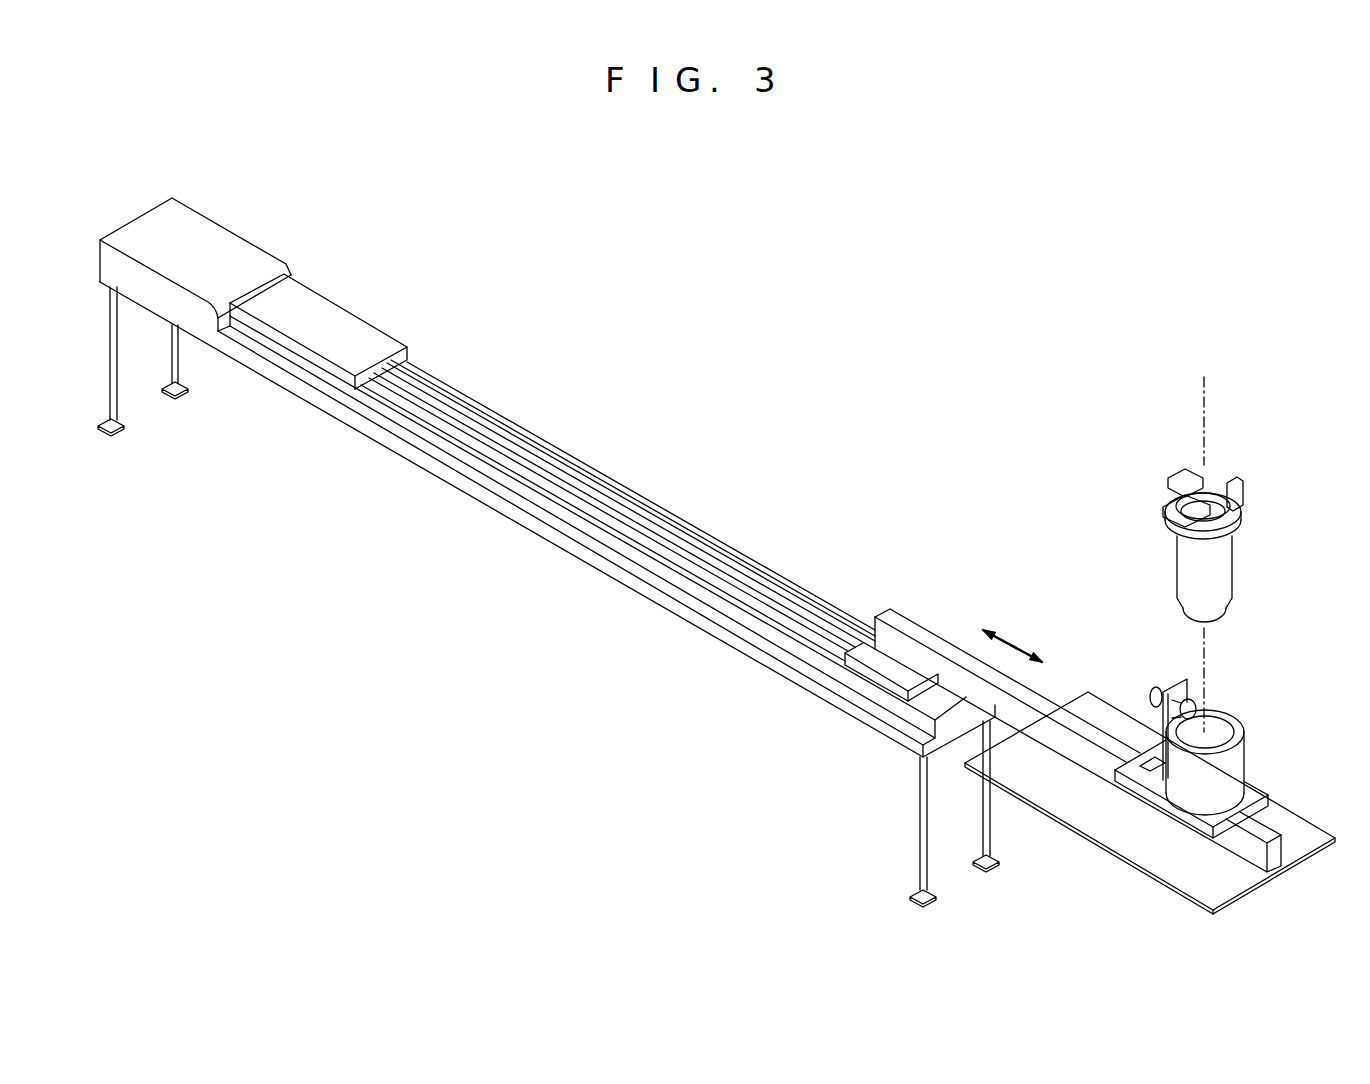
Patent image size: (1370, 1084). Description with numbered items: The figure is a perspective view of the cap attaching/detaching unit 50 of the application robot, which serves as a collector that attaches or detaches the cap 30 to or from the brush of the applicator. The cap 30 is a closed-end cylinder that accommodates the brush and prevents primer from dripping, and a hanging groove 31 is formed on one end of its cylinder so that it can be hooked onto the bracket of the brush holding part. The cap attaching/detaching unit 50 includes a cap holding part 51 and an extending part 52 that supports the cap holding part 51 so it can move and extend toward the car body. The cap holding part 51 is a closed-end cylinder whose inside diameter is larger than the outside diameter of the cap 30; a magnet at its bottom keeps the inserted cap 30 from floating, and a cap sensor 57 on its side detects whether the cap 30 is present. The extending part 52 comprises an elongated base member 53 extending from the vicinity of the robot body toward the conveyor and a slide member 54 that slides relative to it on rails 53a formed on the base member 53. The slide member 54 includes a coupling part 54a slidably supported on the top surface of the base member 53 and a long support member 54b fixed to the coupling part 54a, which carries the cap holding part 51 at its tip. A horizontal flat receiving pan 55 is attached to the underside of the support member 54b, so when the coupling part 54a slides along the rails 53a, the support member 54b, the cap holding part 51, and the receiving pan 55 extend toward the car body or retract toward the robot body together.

The cap 30 is at (1249, 556).
The hanging groove 31 is at (1193, 533).
The cap attaching/detaching unit 50 is at (631, 434).
The cap holding part 51 is at (1194, 728).
The extending part 52 is at (821, 616).
The base member 53 is at (618, 545).
The rails 53a is at (792, 630).
The slide member 54 is at (1056, 707).
The coupling part 54a is at (888, 667).
The support member 54b is at (1040, 705).
The receiving pan 55 is at (1115, 853).
The cap sensor 57 is at (1180, 680).